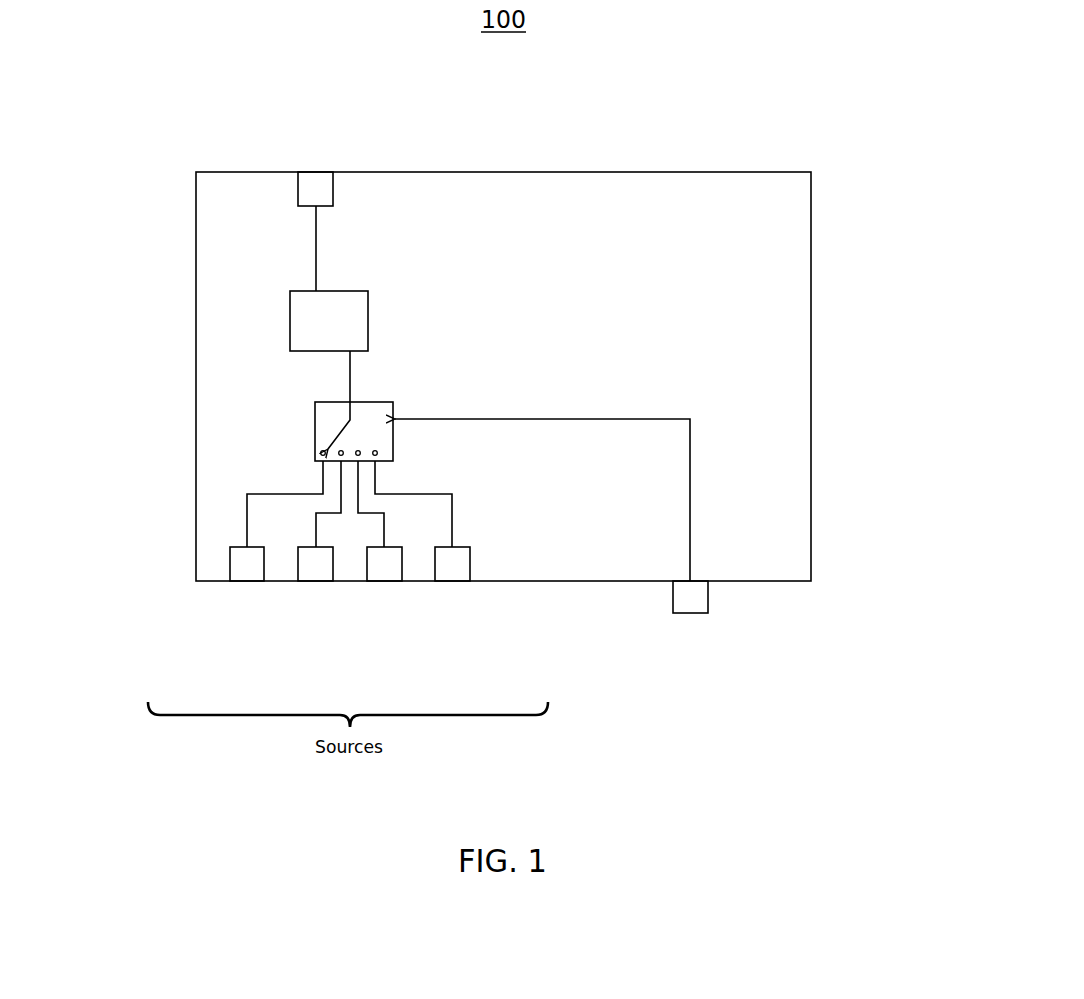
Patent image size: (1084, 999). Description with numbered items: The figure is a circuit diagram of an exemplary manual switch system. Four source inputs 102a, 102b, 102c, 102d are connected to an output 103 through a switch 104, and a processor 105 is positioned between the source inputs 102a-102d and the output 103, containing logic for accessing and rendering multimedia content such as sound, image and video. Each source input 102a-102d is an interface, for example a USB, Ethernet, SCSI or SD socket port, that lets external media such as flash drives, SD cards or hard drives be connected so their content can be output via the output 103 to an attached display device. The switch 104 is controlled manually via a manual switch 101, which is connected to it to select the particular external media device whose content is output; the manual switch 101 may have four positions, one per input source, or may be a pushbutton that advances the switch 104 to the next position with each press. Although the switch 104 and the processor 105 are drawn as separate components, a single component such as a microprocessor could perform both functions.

The manual switch 101 is at (692, 615).
The source input 102a is at (248, 581).
The source input 102b is at (316, 581).
The source input 102c is at (383, 581).
The source input 102d is at (452, 581).
The output 103 is at (316, 172).
The switch 104 is at (315, 426).
The processor 105 is at (290, 315).